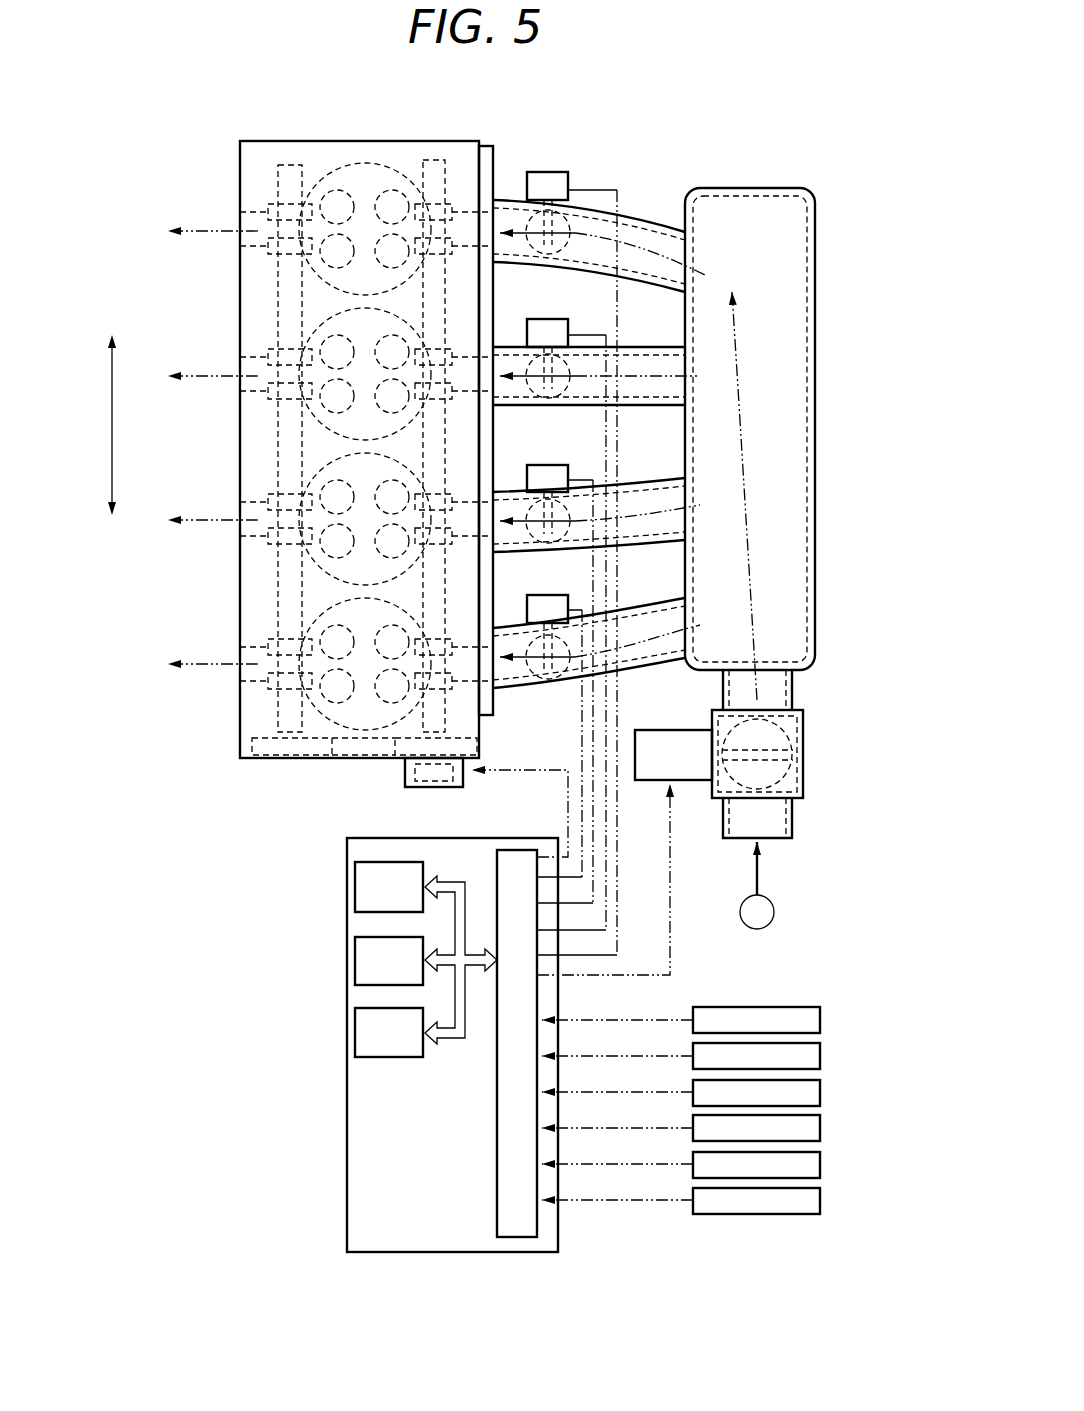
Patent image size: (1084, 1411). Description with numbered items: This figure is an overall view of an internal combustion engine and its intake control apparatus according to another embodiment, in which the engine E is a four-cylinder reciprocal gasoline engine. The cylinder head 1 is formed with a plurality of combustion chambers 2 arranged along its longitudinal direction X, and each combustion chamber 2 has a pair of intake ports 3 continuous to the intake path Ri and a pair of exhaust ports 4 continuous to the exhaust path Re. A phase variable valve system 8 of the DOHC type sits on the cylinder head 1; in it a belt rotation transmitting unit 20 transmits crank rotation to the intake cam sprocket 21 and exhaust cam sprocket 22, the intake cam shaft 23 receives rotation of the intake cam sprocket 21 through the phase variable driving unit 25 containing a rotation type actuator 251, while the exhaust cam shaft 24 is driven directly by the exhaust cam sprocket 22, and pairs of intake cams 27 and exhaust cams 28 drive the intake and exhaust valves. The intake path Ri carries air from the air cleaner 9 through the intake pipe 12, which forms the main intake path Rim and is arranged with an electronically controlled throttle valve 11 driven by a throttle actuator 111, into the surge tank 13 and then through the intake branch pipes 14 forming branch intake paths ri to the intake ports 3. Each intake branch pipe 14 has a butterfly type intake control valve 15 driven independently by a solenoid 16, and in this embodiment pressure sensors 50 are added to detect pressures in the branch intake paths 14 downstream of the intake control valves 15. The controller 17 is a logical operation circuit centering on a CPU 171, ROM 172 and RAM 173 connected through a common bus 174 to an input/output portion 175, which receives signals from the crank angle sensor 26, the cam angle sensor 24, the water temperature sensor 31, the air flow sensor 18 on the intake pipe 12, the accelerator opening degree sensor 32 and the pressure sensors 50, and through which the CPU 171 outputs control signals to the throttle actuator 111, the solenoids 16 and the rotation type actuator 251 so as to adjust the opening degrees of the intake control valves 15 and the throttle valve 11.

The cylinder head 1 is at (458, 141).
The combustion chamber 2 is at (370, 165).
The intake port 3 is at (392, 205).
The exhaust port 4 is at (337, 205).
The phase variable valve system 8 is at (376, 797).
The air cleaner 9 is at (757, 885).
The throttle valve 11 is at (790, 735).
The intake pipe 12 is at (792, 818).
The surge tank 13 is at (815, 311).
The intake branch pipe 14 is at (628, 212).
The intake control valve 15 is at (556, 250).
The electromagnetic solenoid actuator 16 is at (547, 172).
The controller 17 is at (355, 1212).
The air flow sensor 18 is at (820, 1125).
The belt rotation transmitting unit 20 is at (362, 766).
The intake cam sprocket 21 is at (492, 774).
The exhaust cam sprocket 22 is at (268, 733).
The intake cam shaft 23 is at (452, 730).
The exhaust cam shaft 24 is at (820, 1053).
The phase variable driving unit (VVT) 25 is at (430, 790).
The crank angle sensor 26 is at (820, 1017).
The intake cam 27 is at (445, 345).
The exhaust cam 28 is at (298, 258).
The water temperature sensor 31 is at (820, 1089).
The accelerator opening degree sensor 32 is at (820, 1161).
The pressure sensor 50 is at (820, 1197).
The throttle actuator 111 is at (682, 730).
The CPU 171 is at (355, 895).
The ROM 172 is at (355, 969).
The RAM 173 is at (355, 1045).
The common bus 174 is at (458, 1050).
The input/output portion 175 is at (545, 1232).
The rotation type actuator 251 is at (442, 783).
The engine E is at (687, 154).
The exhaust path Re is at (205, 225).
The intake path Ri is at (775, 457).
The main intake path Rim is at (765, 596).
The branch intake path ri is at (658, 240).
The longitudinal direction X is at (112, 432).